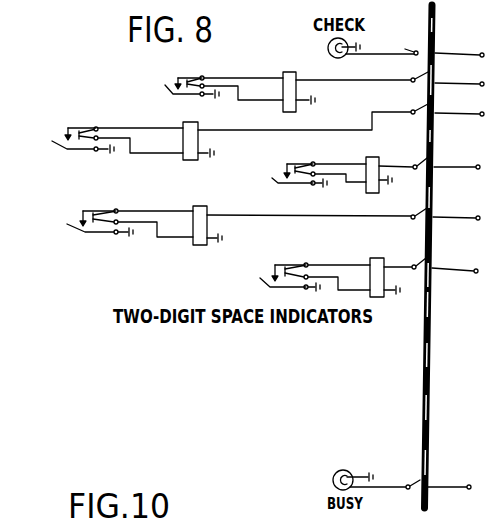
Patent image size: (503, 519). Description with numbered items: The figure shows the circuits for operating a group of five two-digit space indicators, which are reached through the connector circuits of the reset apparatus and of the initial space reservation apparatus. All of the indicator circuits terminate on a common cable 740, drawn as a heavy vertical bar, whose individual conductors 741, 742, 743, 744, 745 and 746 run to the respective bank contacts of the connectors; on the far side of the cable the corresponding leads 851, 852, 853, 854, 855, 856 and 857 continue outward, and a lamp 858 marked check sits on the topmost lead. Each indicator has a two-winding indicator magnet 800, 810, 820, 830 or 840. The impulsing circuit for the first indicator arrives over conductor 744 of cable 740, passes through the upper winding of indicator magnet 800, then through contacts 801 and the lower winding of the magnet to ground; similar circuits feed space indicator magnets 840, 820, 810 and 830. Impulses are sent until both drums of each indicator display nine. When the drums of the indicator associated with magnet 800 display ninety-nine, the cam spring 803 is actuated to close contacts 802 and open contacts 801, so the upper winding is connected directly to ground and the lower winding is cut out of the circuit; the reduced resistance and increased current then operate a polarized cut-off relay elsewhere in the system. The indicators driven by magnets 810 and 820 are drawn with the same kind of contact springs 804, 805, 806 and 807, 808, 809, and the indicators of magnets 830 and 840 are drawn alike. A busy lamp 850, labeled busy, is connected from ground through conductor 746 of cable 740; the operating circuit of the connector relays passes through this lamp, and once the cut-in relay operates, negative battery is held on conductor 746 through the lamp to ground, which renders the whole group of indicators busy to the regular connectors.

The cable 740 is at (428, 27).
The contact of relay 830 741 is at (425, 155).
The contact of relay 820 742 is at (425, 213).
The contact of relay 840 743 is at (423, 258).
The conductor 744 is at (426, 74).
The contact of relay 810 745 is at (426, 102).
The conductor 746 is at (413, 480).
The indicator magnet 800 is at (296, 90).
The contacts 801 is at (194, 77).
The contacts 802 is at (171, 83).
The cam spring 803 is at (174, 95).
The relay 810 battery contact 804 is at (66, 150).
The relay 810 armature 805 is at (62, 130).
The relay 810 contact set 806 is at (138, 140).
The relay 820 armature 807 is at (74, 221).
The relay 820 contact set 808 is at (103, 212).
The relay 820 battery contact 809 is at (87, 234).
The space indicator magnet 810 is at (190, 161).
The space indicator magnet 820 is at (195, 246).
The space indicator magnet 830 is at (365, 192).
The space indicator magnet 840 is at (370, 258).
The busy lamp 850 is at (340, 469).
The output terminal 851 is at (481, 53).
The output terminal 852 is at (481, 83).
The output terminal 853 is at (481, 113).
The output terminal 854 is at (477, 165).
The output terminal 855 is at (477, 216).
The output terminal 856 is at (476, 268).
The output terminal 857 is at (469, 486).
The check lamp 858 is at (328, 47).